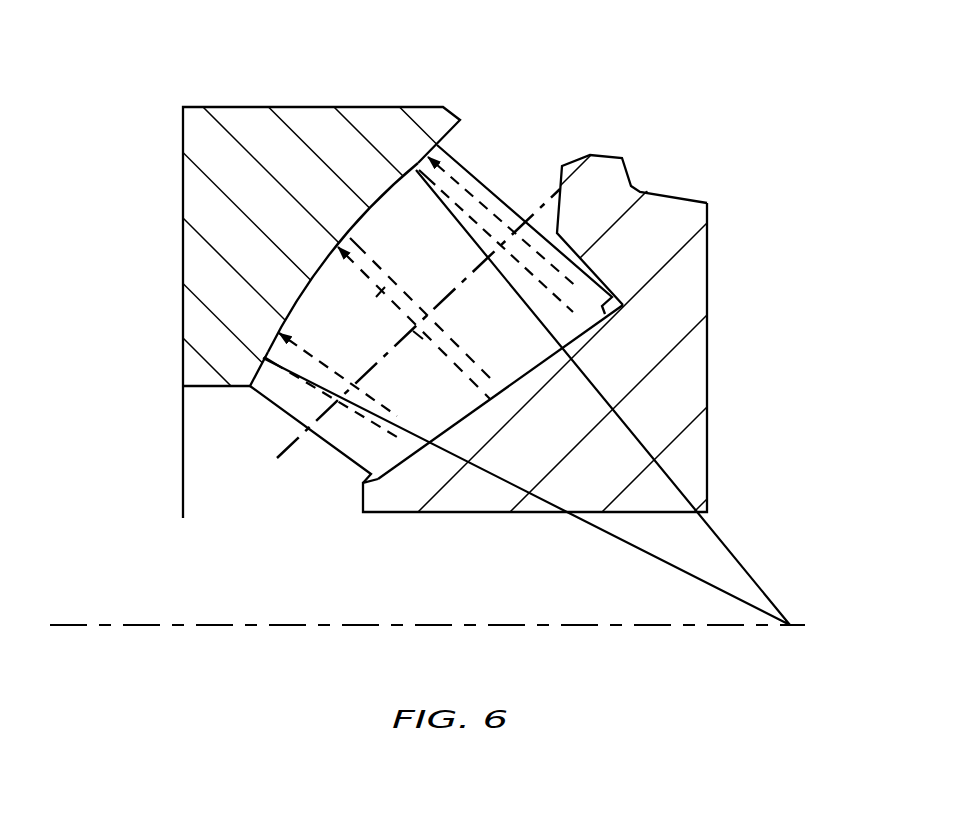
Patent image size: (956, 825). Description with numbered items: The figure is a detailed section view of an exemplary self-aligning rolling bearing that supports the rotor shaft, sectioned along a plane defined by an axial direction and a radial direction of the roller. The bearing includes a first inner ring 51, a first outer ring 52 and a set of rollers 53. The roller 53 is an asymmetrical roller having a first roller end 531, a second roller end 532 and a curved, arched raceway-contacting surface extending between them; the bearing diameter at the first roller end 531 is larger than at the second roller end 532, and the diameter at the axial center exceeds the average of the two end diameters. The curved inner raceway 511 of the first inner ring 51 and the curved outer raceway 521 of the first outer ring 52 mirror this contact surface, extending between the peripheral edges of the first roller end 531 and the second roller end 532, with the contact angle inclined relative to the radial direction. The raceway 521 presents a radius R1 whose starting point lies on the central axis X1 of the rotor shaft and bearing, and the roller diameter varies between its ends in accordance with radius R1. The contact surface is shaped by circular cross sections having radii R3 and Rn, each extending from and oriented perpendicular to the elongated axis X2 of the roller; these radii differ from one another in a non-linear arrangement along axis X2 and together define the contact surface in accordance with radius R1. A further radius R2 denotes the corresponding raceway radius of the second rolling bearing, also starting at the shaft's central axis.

The first inner ring 51 is at (493, 284).
The curved inner raceway 511 is at (511, 388).
The first outer ring 52 is at (406, 294).
The curved outer raceway 521 is at (329, 257).
The roller 53 is at (580, 250).
The first roller end 531 is at (510, 198).
The second roller end 532 is at (268, 399).
The radius R1 is at (598, 510).
The radius R2 is at (383, 288).
The cross section radius R3 is at (458, 205).
The cross section radius Rn is at (345, 383).
The central axis X1 is at (446, 631).
The elongated axis X2 is at (433, 310).